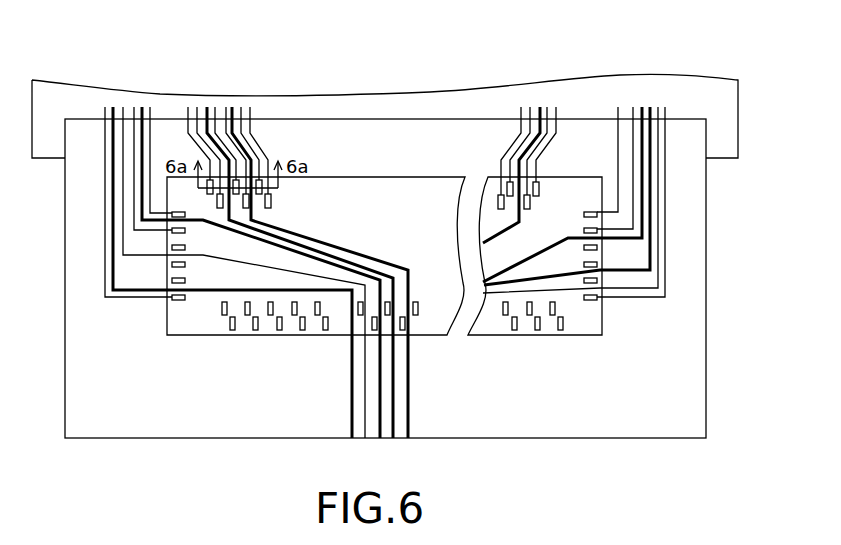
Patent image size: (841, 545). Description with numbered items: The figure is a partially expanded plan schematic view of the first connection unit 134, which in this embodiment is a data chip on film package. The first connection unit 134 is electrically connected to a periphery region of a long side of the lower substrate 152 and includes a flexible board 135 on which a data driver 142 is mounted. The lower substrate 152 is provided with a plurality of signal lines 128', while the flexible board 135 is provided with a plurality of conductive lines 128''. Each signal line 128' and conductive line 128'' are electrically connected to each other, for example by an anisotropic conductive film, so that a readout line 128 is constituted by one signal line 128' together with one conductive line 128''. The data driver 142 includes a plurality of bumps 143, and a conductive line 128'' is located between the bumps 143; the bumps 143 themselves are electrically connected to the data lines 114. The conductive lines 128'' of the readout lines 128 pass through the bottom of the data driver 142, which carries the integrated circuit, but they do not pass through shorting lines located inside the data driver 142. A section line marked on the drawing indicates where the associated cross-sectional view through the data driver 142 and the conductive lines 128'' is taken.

The lower substrate 152 is at (45, 113).
The first connection unit 134 is at (707, 412).
The flexible board 135 is at (642, 390).
The data driver 142 is at (588, 324).
The bumps 143 is at (268, 203).
The data lines 114 is at (262, 150).
The readout line 128 is at (197, 221).
The signal lines 128' is at (235, 226).
The conductive lines 128'' is at (197, 272).